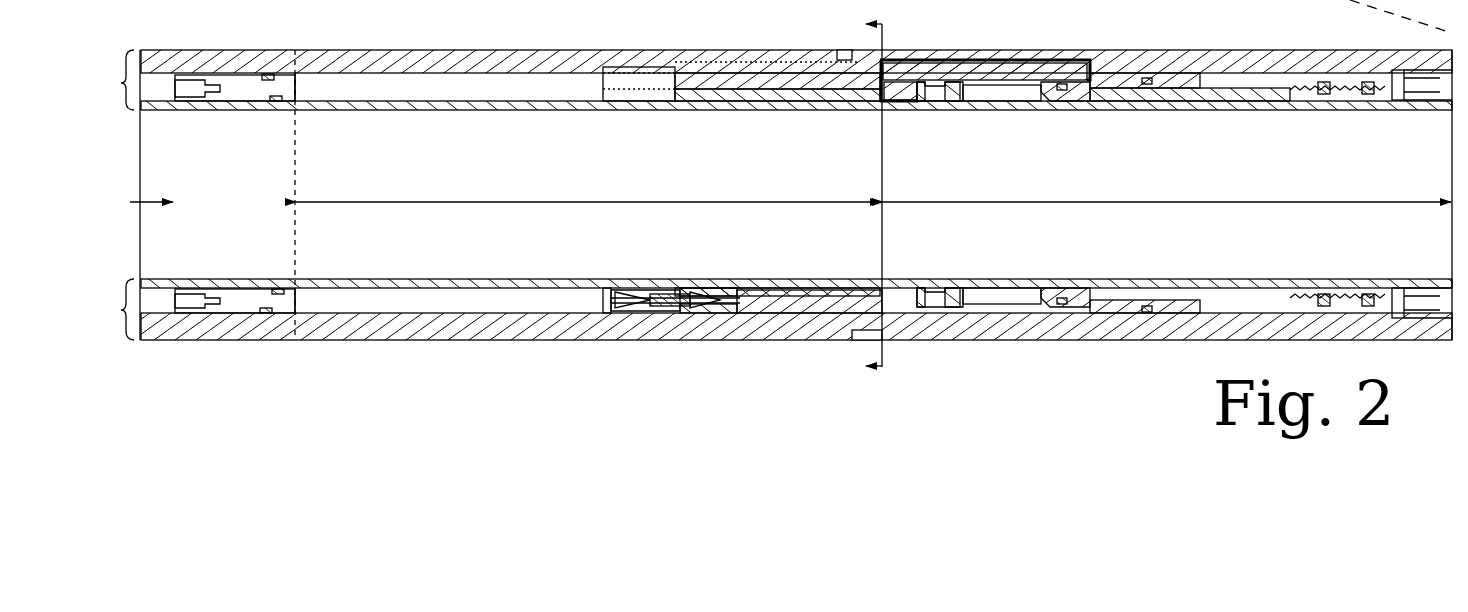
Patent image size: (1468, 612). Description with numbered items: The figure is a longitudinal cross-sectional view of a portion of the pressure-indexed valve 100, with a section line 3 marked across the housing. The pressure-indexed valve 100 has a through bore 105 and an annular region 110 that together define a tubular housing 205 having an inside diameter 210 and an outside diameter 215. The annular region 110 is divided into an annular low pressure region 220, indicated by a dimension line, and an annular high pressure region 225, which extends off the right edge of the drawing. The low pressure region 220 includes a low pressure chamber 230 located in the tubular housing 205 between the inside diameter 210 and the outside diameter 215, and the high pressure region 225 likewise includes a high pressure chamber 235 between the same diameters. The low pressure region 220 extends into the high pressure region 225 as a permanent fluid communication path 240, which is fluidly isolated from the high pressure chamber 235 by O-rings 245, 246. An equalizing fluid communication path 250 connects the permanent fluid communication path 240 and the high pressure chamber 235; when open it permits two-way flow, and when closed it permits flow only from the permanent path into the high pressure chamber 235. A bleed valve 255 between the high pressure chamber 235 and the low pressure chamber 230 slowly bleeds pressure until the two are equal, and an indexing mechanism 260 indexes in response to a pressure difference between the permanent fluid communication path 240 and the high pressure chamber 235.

The pressure-indexed valve 100 is at (405, 49).
The through bore 105 is at (130, 202).
The annular region 110 is at (107, 195).
The tubular housing 205 is at (483, 50).
The inside diameter 210 is at (497, 112).
The outside diameter 215 is at (553, 50).
The annular low pressure region 220 is at (498, 198).
The annular high pressure region 225 is at (1066, 198).
The low pressure chamber 230 is at (358, 95).
The high pressure chamber 235 is at (968, 82).
The permanent fluid communication path 240 is at (1050, 58).
The O-ring 245 is at (1062, 88).
The O-ring 246 is at (1147, 92).
The equalizing fluid communication path 250 is at (897, 101).
The bleed valve 255 is at (666, 321).
The indexing mechanism 260 is at (997, 101).
The section line 3- 3 is at (861, 196).